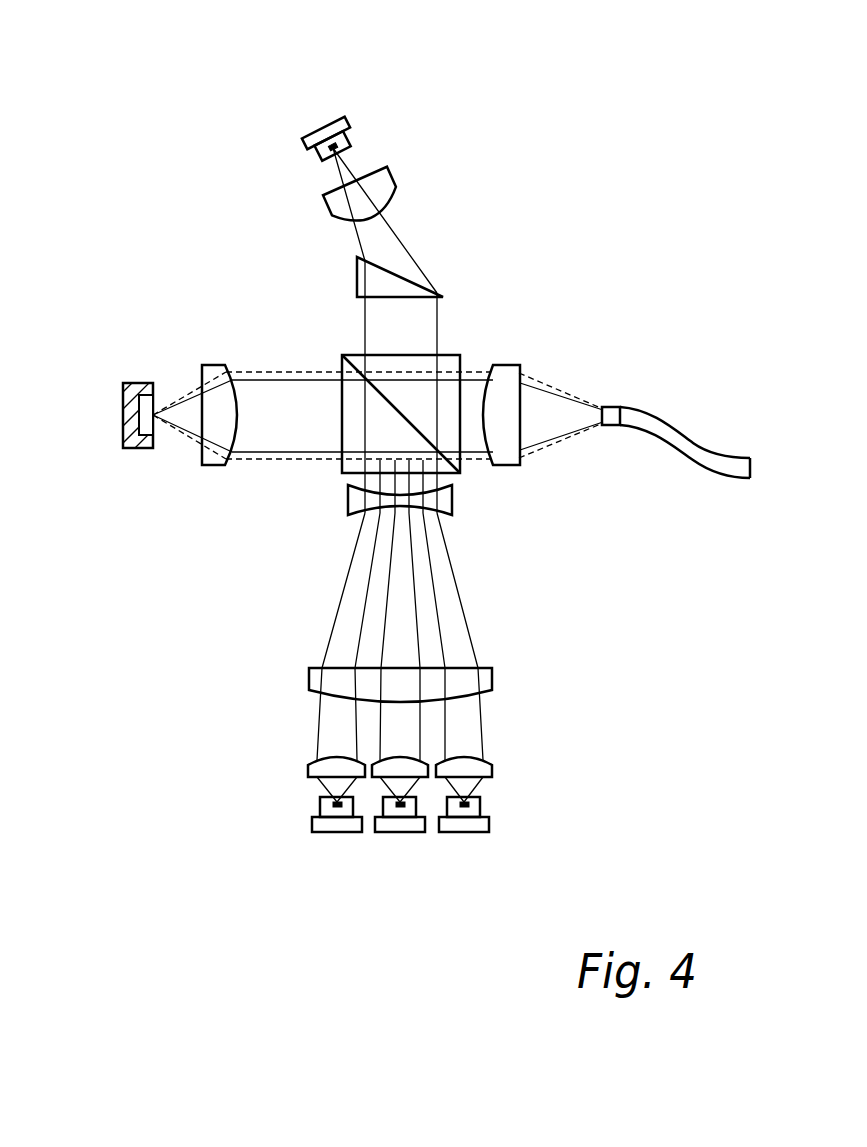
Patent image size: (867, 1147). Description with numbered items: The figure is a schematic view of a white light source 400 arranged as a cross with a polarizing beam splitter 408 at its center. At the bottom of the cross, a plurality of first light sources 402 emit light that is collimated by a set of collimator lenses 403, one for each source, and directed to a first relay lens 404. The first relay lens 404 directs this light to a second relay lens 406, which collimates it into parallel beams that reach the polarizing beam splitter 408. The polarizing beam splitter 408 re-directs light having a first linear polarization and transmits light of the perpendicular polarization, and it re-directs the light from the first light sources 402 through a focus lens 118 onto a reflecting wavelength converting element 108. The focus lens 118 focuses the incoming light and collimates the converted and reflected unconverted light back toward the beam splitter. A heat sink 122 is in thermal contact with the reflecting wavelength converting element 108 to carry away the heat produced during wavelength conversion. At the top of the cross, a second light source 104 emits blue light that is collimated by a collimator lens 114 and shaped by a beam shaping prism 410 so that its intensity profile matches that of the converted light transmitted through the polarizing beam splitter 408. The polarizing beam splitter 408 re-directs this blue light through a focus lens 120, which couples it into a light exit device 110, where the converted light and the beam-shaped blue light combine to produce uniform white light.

The white light source 400 is at (574, 99).
The second light source 104 is at (313, 122).
The collimator lens 114 is at (397, 193).
The beam shaping prism 410 is at (427, 284).
The polarizing beam splitter 408 is at (461, 474).
The second relay lens 406 is at (453, 502).
The focus lens 118 is at (210, 467).
The reflecting wavelength converting element 108 is at (153, 403).
The heat sink 122 is at (127, 383).
The focus lens 120 is at (513, 362).
The light exit device 110 is at (660, 417).
The first relay lens 404 is at (492, 677).
The collimator lenses 403 is at (308, 765).
The first light sources 402 is at (337, 832).